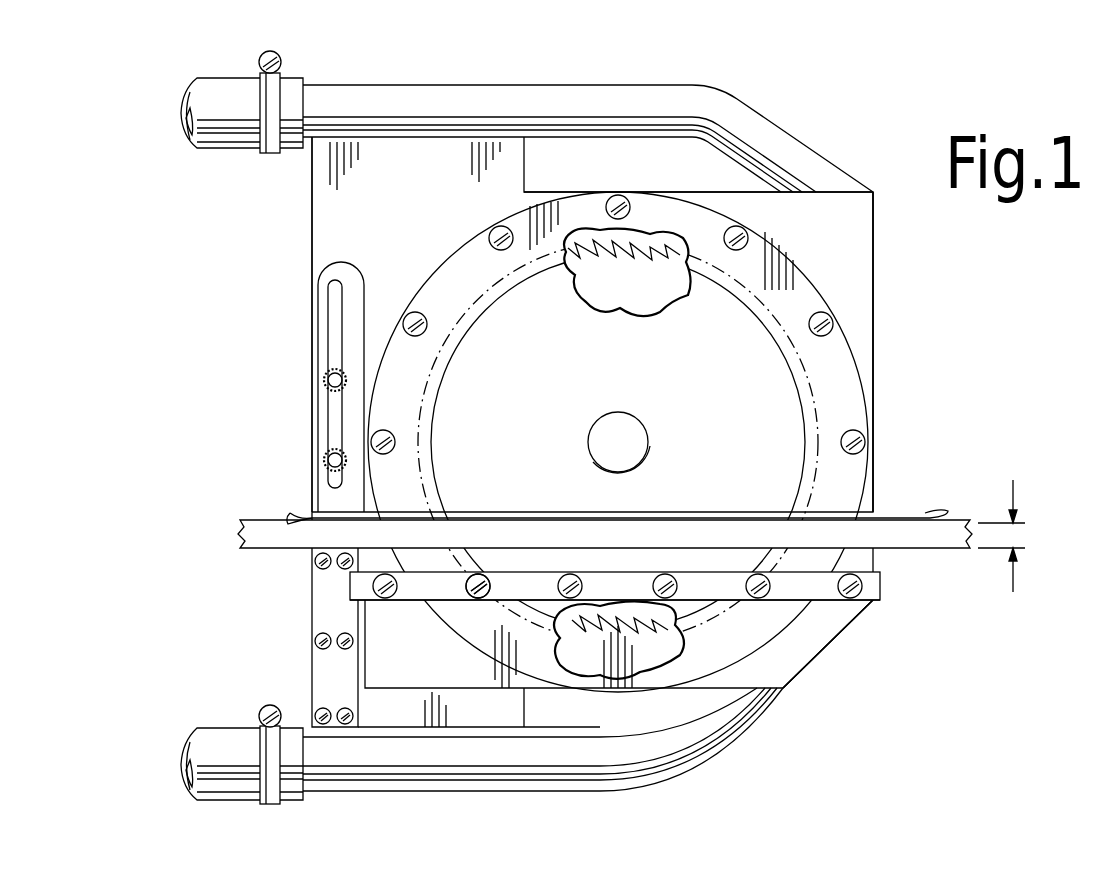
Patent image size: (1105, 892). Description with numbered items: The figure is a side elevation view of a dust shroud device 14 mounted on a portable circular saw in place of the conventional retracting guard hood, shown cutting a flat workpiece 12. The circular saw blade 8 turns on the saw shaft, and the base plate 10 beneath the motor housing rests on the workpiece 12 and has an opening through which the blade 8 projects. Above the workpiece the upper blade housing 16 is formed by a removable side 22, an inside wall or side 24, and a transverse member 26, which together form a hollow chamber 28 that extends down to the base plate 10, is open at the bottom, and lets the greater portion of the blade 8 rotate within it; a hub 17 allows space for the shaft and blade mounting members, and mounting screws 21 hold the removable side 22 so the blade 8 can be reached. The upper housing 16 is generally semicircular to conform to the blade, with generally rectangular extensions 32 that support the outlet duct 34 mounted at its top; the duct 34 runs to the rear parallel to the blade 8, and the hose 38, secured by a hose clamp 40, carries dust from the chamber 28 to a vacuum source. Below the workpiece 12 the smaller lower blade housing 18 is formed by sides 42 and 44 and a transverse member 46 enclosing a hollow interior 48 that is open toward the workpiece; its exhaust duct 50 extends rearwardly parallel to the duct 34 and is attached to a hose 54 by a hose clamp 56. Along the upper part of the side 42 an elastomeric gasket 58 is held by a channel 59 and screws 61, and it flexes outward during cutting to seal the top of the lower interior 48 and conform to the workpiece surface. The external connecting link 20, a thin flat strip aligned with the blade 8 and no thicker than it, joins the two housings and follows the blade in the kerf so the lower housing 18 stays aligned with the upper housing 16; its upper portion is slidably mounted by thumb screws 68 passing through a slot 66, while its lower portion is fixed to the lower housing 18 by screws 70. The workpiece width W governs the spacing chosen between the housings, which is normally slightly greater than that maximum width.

The circular saw blade 8 is at (612, 622).
The base plate 10 is at (903, 515).
The workpiece 12 is at (258, 530).
The dust shroud device 14 is at (888, 312).
The upper blade housing 16 is at (592, 324).
The hub 17 is at (637, 433).
The lower blade housing 18 is at (619, 618).
The external connecting link 20 is at (310, 338).
The mounting screws 21 is at (494, 250).
The side 22 is at (618, 442).
The side 24 is at (875, 345).
The transverse member 26 is at (603, 192).
The hollow chamber 28 is at (637, 241).
The rectangular extensions 32 is at (669, 240).
The outlet duct 34 is at (558, 97).
The hose 38 is at (229, 86).
The hose clamp 40 is at (270, 153).
The side 42 is at (826, 644).
The side 44 is at (822, 655).
The transverse member 46 is at (590, 692).
The hollow interior 48 is at (609, 662).
The exhaust duct 50 is at (713, 750).
The hose 54 is at (220, 743).
The hose clamp 56 is at (278, 738).
The gasket 58 is at (615, 574).
The channel 59 is at (527, 585).
The screws 61 is at (480, 603).
The slot 66 is at (337, 293).
The thumb screws 68 is at (323, 379).
The screws 70 is at (353, 642).
The workpiece width W is at (1001, 536).